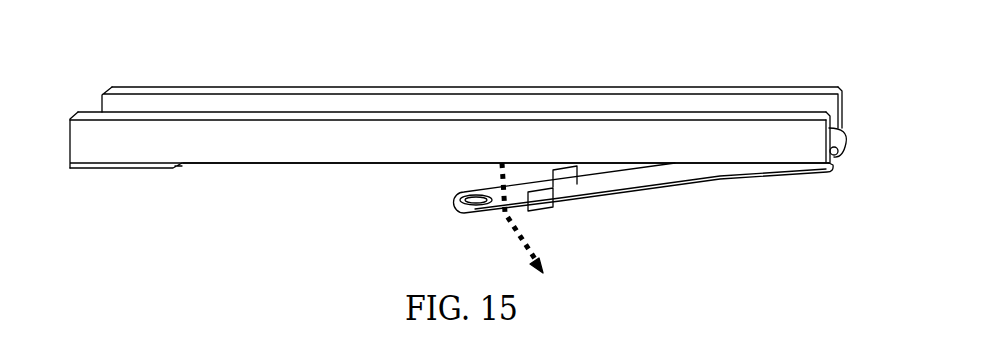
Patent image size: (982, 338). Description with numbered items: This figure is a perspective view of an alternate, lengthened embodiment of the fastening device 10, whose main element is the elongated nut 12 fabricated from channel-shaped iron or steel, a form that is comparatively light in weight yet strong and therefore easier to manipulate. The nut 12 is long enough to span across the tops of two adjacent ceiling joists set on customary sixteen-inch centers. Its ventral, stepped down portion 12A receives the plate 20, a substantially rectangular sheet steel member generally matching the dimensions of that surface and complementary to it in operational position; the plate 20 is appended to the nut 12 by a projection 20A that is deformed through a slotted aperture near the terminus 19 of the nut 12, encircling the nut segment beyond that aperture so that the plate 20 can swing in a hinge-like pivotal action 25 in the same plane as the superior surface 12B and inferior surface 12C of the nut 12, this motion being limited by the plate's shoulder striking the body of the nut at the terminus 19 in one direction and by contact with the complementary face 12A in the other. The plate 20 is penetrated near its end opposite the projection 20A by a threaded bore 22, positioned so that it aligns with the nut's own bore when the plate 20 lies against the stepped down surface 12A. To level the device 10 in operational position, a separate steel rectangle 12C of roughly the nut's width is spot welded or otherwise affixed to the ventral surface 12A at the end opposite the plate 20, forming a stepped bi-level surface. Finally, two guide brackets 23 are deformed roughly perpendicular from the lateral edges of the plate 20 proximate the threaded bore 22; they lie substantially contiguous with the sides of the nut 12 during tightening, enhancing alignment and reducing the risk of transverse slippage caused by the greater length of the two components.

The fastening device 10 is at (157, 128).
The elongated nut 12 is at (232, 153).
The stepped down portion 12A is at (302, 178).
The superior surface 12B is at (280, 82).
The steel rectangle 12C is at (122, 181).
The terminus 19 is at (854, 96).
The plate 20 is at (657, 183).
The projection 20A is at (841, 170).
The threaded bore 22 is at (432, 211).
The guide brackets 23 is at (570, 193).
The hinge-like pivotal action 25 is at (504, 242).